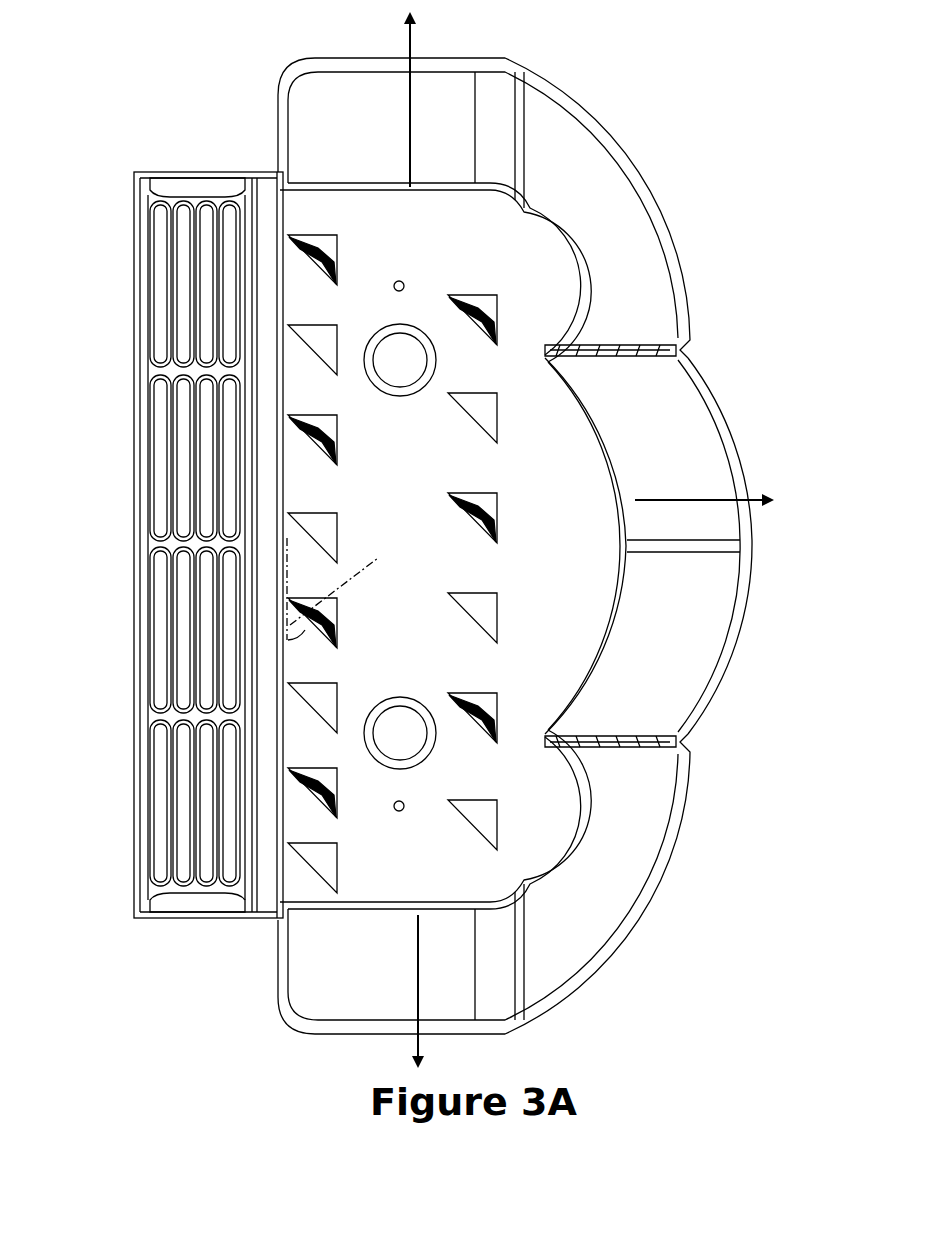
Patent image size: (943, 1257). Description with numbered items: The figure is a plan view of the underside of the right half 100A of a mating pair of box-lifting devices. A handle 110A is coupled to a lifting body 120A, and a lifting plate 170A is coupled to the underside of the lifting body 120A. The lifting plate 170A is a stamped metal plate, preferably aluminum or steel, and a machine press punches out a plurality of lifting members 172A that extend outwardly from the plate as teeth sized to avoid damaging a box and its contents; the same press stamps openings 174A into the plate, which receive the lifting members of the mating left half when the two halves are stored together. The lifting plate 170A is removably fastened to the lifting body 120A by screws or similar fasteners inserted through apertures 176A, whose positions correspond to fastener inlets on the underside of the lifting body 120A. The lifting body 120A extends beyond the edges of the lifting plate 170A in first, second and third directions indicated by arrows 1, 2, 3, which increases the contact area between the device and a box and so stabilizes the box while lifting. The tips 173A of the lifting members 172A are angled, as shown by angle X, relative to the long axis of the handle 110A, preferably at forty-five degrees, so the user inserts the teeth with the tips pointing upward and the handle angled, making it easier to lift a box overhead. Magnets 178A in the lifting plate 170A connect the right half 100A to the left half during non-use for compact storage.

The right half 100A is at (112, 462).
The handle 110A is at (143, 580).
The lifting body 120A is at (715, 615).
The lifting plate 170A is at (378, 228).
The lifting members 172A is at (316, 432).
The tips 173A is at (490, 313).
The openings 174A is at (315, 850).
The apertures 176A is at (405, 804).
The magnets 178A is at (412, 728).
The angle X is at (290, 621).
The arrow for first direction 1 is at (421, 93).
The arrow for second direction 2 is at (712, 485).
The arrow for third direction 3 is at (433, 995).